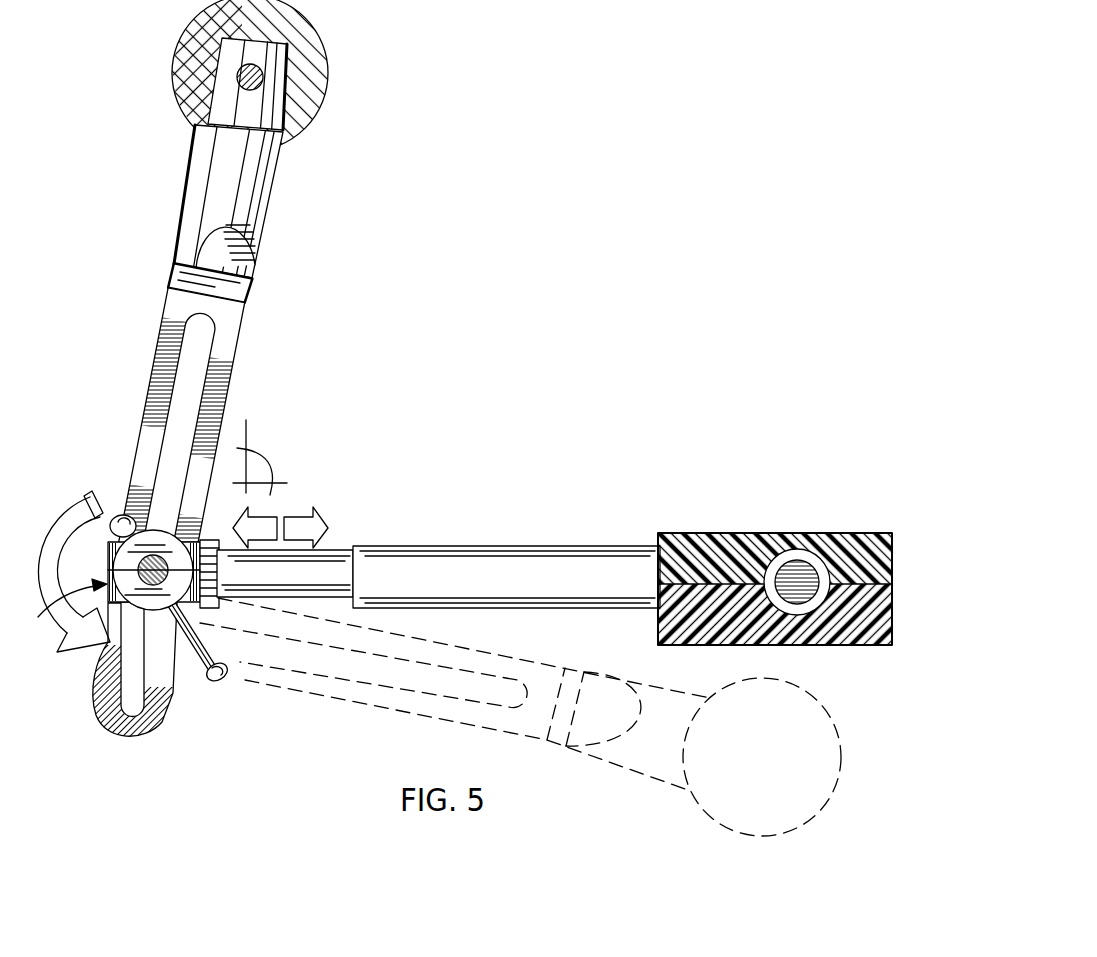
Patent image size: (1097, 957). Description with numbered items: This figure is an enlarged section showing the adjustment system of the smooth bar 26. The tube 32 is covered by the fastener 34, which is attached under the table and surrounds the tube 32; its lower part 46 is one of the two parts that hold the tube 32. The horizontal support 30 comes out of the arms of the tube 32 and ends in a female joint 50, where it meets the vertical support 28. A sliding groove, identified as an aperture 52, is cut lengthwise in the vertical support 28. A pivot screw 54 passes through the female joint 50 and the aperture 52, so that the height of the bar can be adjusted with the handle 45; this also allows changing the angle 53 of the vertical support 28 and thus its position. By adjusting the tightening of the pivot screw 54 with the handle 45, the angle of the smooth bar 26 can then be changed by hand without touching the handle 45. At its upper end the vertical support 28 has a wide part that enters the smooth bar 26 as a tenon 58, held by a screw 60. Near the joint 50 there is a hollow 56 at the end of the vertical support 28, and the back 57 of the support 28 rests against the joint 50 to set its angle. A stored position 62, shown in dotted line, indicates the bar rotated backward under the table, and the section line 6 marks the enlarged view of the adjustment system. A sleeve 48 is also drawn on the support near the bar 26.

The section line 6- 6 is at (60, 606).
The smooth bar 26 is at (307, 108).
The vertical support 28 is at (230, 315).
The horizontal support 30 is at (320, 565).
The tube 32 is at (387, 560).
The fastener 34 is at (688, 538).
The handle 45 is at (218, 680).
The lower part 46 is at (655, 590).
The sleeve 48 is at (190, 157).
The female joint 50 is at (88, 497).
The aperture 52 is at (202, 340).
The angle 53 is at (268, 455).
The pivot screw 54 is at (123, 617).
The hollow 56 is at (108, 663).
The back 57 is at (168, 695).
The tenon 58 is at (188, 132).
The screw 60 is at (263, 77).
The stored position 62 is at (815, 700).